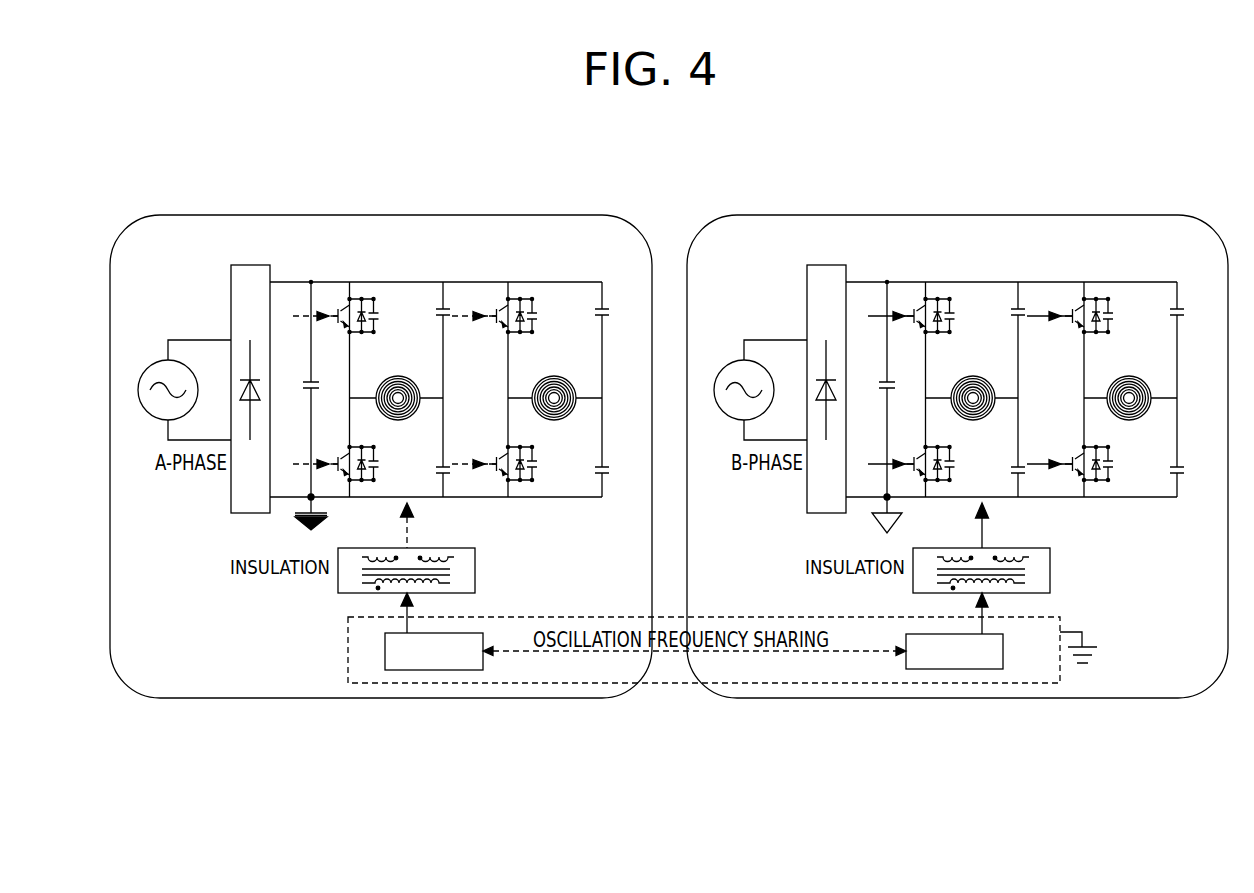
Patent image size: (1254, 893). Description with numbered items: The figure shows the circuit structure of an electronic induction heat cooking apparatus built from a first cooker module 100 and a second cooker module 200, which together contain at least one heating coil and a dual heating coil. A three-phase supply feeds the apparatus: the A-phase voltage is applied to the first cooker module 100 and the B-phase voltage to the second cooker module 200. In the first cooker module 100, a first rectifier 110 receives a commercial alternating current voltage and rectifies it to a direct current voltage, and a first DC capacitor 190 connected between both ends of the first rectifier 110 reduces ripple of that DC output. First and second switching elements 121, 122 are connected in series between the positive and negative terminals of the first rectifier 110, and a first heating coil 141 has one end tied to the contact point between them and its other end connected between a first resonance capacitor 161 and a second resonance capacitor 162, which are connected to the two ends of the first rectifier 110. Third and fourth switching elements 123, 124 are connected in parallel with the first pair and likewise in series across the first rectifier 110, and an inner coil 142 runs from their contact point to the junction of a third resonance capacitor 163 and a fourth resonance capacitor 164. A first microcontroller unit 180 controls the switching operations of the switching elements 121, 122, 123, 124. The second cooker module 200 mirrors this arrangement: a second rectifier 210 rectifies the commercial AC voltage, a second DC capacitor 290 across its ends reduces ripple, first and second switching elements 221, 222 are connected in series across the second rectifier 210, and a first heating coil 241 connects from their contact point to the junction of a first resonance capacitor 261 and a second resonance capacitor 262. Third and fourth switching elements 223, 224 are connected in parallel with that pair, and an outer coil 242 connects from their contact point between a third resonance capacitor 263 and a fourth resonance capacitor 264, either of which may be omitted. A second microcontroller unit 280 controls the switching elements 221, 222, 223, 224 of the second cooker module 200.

The first cooker module 100 is at (382, 215).
The first rectifier 110 is at (231, 310).
The first DC capacitor 190 is at (306, 372).
The first switching element 121 is at (366, 298).
The second switching element 122 is at (365, 481).
The third switching element 123 is at (524, 298).
The fourth switching element 124 is at (522, 481).
The first heating coil 141 is at (398, 377).
The inner coil 142 is at (554, 377).
The first resonance capacitor 161 is at (448, 307).
The second resonance capacitor 162 is at (447, 475).
The third resonance capacitor 163 is at (607, 307).
The fourth resonance capacitor 164 is at (606, 475).
The first microcontroller unit 180 is at (433, 670).
The second cooker module 200 is at (957, 215).
The second rectifier 210 is at (807, 310).
The second DC capacitor 290 is at (882, 372).
The first switching element 221 is at (942, 298).
The second switching element 222 is at (941, 481).
The third switching element 223 is at (1099, 298).
The fourth switching element 224 is at (1098, 481).
The first heating coil 241 is at (973, 377).
The outer coil 242 is at (1129, 377).
The first resonance capacitor 261 is at (1023, 307).
The second resonance capacitor 262 is at (1022, 475).
The third resonance capacitor 263 is at (1182, 307).
The fourth resonance capacitor 264 is at (1181, 475).
The second microcontroller unit 280 is at (955, 669).